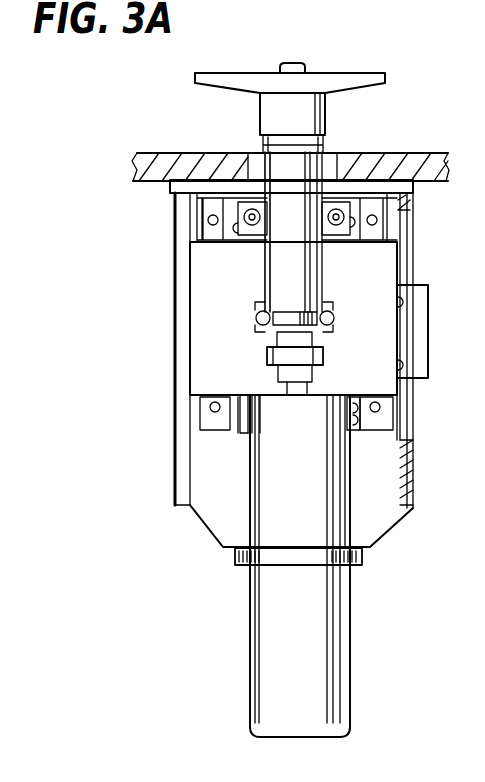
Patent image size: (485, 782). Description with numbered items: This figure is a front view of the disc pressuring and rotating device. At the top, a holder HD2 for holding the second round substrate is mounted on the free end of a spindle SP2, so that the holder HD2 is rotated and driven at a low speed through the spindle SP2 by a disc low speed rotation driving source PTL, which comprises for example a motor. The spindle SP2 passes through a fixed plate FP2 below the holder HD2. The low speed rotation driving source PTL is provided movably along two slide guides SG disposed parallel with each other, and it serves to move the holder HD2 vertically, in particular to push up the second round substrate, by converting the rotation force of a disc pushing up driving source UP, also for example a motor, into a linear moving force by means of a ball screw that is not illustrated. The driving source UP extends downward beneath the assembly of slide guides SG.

The holder HD2 is at (327, 116).
The fixed plate FP2 is at (152, 153).
The spindle SP2 is at (270, 273).
The slide guides SG is at (373, 420).
The disc low speed rotation driving source PTL is at (327, 520).
The disc pushing up driving source UP is at (266, 702).